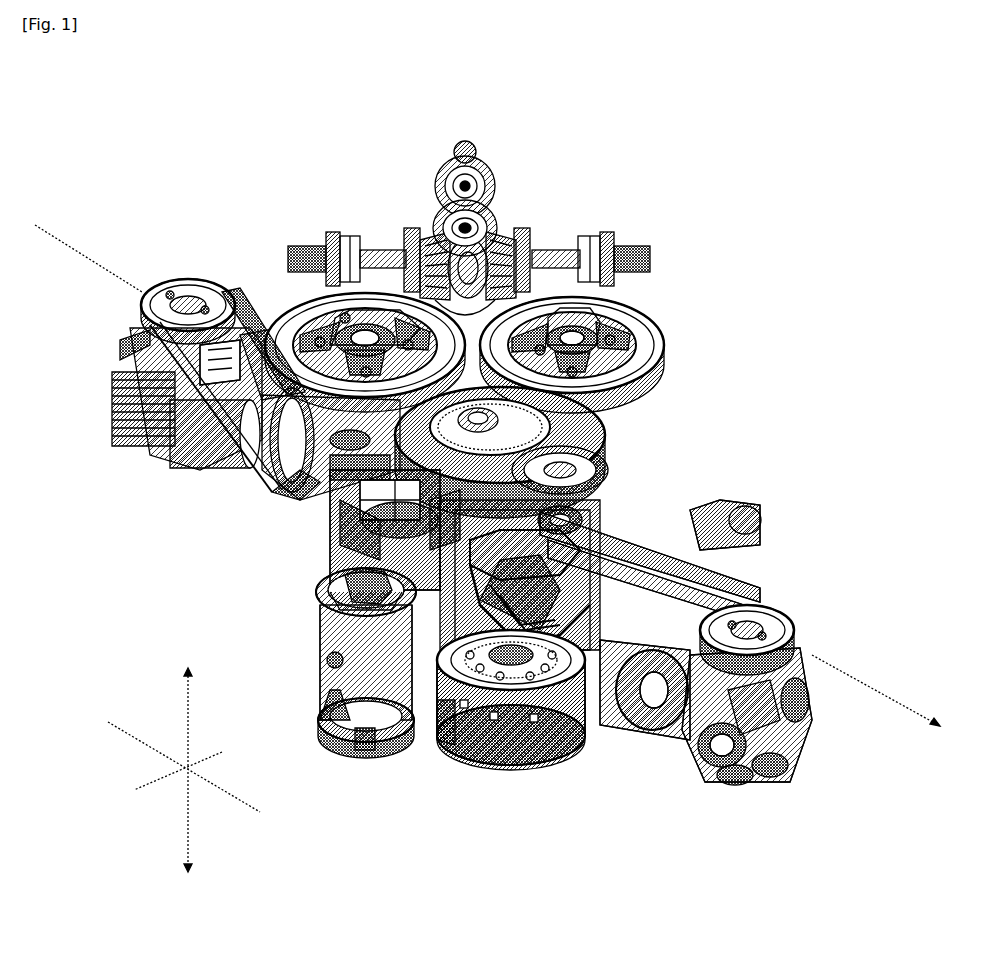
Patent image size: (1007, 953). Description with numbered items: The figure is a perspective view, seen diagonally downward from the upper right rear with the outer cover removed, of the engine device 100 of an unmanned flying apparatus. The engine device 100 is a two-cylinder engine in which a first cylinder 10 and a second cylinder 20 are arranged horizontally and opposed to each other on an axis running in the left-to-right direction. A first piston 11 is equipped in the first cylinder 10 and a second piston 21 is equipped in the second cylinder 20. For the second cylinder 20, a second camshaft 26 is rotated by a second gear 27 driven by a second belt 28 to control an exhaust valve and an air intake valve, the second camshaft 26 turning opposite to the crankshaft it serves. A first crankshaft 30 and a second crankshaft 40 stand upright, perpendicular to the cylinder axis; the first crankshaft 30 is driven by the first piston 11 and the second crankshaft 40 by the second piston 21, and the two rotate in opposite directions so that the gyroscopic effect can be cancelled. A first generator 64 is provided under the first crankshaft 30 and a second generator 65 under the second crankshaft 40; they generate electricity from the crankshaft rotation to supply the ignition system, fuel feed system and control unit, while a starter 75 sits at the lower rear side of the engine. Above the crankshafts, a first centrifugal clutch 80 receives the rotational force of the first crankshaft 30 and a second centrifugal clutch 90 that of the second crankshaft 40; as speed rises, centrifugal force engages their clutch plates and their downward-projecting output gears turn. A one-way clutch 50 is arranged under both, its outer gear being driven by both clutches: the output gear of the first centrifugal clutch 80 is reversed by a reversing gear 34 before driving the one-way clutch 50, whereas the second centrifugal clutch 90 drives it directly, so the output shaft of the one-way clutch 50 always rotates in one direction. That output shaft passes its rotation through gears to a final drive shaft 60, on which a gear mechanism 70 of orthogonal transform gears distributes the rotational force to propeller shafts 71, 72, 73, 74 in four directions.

The engine device 100 is at (740, 142).
The first cylinder 10 is at (216, 486).
The first piston 11 is at (195, 455).
The second cylinder 20 is at (645, 746).
The second piston 21 is at (605, 680).
The second camshaft 26 is at (800, 630).
The second gear 27 is at (745, 595).
The second belt 28 is at (765, 605).
The first crankshaft 30 is at (318, 524).
The reversing gear 34 is at (300, 482).
The second crankshaft 40 is at (560, 756).
The one-way clutch 50 is at (506, 452).
The final drive shaft 60 is at (480, 142).
The first generator 64 is at (314, 590).
The second generator 65 is at (448, 738).
The gear mechanism 70 is at (406, 216).
The propeller shaft 71 is at (555, 246).
The propeller shaft 72 is at (452, 162).
The propeller shaft 73 is at (392, 246).
The propeller shaft 74 is at (518, 234).
The starter 75 is at (336, 748).
The first centrifugal clutch 80 is at (296, 300).
The second centrifugal clutch 90 is at (660, 320).